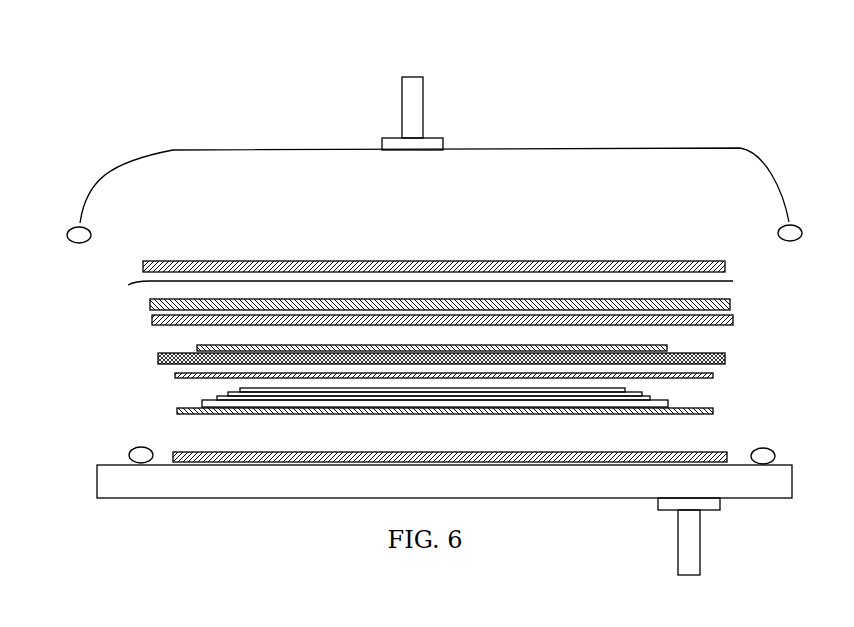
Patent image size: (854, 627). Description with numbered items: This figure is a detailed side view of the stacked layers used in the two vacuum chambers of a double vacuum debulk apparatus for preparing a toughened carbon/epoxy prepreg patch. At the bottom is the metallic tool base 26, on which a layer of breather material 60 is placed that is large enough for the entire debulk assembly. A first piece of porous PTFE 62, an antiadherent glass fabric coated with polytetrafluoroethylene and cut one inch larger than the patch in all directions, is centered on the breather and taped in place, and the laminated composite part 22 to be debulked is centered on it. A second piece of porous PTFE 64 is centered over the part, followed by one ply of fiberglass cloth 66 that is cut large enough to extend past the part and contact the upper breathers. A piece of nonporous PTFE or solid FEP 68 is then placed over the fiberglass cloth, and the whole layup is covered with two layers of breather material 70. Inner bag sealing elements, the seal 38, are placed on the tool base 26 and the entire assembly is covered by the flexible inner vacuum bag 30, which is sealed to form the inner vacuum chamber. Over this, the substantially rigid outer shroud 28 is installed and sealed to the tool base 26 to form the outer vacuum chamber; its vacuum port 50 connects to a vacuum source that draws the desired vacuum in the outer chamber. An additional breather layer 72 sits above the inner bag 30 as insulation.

The composite part 22 is at (204, 393).
The tool base 26 is at (767, 482).
The outer shroud 28 is at (152, 153).
The inner vacuum bag 30 is at (758, 290).
The seal 38 is at (755, 449).
The vacuum port 50 is at (415, 76).
The breather material 60 is at (190, 448).
The porous PTFE 62 is at (177, 410).
The porous PTFE 64 is at (175, 377).
The fiberglass cloth 66 is at (158, 355).
The nonporous PTFE or solid FEP 68 is at (197, 347).
The breather material 70 is at (733, 320).
The top layer 72 is at (143, 264).